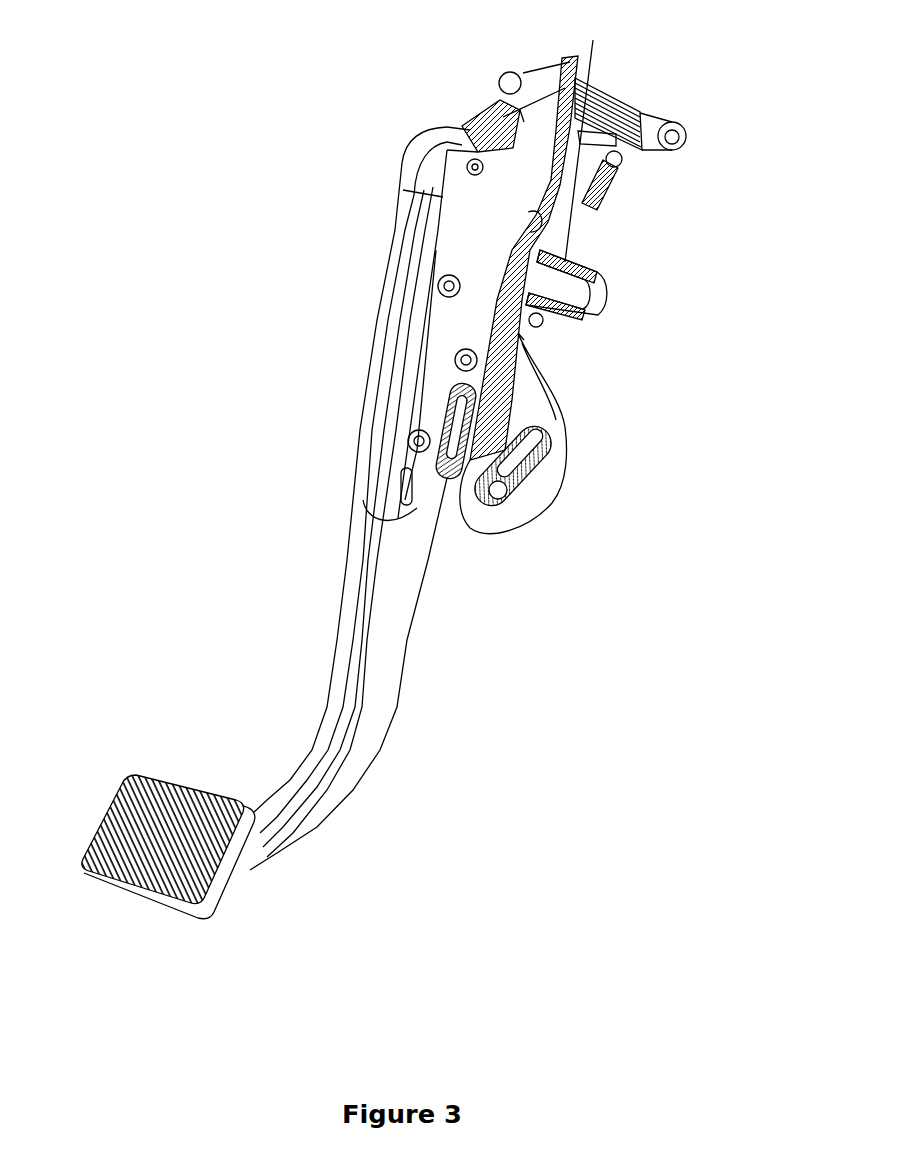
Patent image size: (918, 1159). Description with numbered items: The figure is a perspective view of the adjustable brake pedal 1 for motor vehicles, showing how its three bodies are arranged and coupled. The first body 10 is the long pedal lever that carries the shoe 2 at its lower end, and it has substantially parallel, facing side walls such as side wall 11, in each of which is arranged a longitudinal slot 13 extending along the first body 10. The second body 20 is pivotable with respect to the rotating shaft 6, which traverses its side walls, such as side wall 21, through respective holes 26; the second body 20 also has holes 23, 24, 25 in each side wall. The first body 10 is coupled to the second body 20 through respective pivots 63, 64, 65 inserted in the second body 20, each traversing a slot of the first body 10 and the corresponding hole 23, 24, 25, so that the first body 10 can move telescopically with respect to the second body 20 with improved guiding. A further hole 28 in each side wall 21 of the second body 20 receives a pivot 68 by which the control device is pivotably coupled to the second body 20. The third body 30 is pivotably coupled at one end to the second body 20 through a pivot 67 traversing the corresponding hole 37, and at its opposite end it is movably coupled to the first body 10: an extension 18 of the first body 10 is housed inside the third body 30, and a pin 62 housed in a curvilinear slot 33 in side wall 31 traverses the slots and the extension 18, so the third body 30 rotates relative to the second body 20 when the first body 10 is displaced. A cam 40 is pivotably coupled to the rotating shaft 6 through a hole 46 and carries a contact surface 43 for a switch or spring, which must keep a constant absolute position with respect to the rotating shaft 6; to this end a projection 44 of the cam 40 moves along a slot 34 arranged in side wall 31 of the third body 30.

The adjustable brake pedal 1 is at (222, 611).
The shoe 2 is at (173, 820).
The rotating shaft 6 is at (684, 133).
The first body 10 is at (340, 697).
The side wall 11 is at (388, 652).
The slot 13 is at (405, 489).
The extension 18 is at (448, 490).
The second body 20 is at (437, 327).
The side wall 21 is at (500, 220).
The hole 23 is at (331, 447).
The pivot 63 is at (408, 443).
The hole 24 is at (361, 277).
The pivot 64 is at (438, 285).
The hole 25 is at (371, 379).
The pivot 65 is at (455, 366).
The hole 26 is at (584, 135).
The hole 28 is at (400, 144).
The pivot 68 is at (467, 166).
The third body 30 is at (560, 445).
The side wall 31 is at (505, 422).
The slot 33 is at (535, 482).
The slot 34 is at (524, 340).
The hole 37 is at (693, 164).
The pivot 67 is at (623, 159).
The cam 40 is at (570, 210).
The contact surface 43 is at (592, 295).
The projection 44 is at (543, 320).
The hole 46 is at (651, 116).
The pin 62 is at (496, 494).